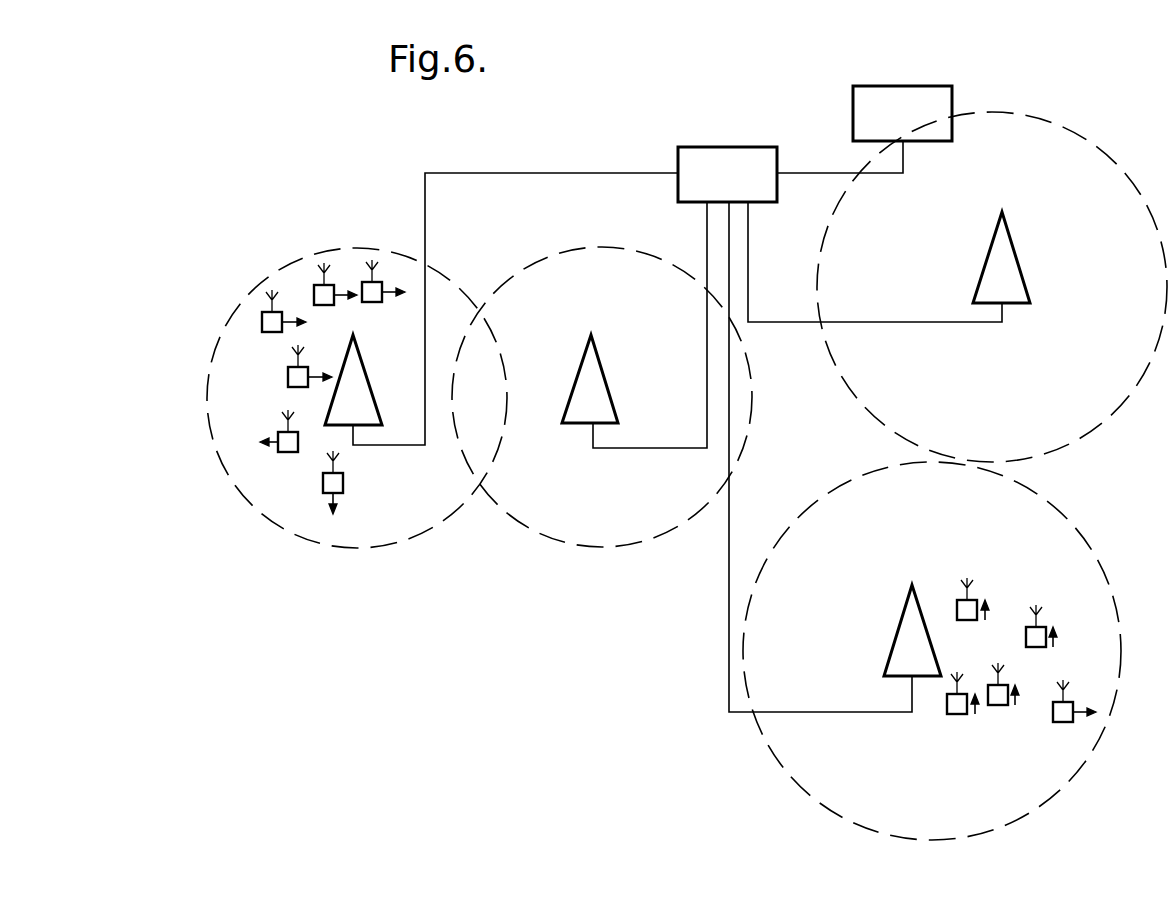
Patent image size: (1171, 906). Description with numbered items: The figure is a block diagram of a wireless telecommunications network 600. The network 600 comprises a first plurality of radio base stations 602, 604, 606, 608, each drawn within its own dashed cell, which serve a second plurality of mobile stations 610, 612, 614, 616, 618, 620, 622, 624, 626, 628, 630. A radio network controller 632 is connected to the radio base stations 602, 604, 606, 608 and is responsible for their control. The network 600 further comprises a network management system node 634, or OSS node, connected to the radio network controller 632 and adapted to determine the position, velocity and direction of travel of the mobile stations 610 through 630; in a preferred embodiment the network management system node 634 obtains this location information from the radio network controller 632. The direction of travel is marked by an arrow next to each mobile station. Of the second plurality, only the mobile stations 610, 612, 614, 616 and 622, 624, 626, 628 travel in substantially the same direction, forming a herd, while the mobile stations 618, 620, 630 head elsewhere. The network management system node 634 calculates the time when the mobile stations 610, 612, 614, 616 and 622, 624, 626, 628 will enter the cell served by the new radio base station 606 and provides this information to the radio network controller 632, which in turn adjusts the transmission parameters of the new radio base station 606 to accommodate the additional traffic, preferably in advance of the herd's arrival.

The network 600 is at (338, 633).
The radio base station 602 is at (357, 373).
The radio base station 604 is at (593, 377).
The new radio base station 606 is at (1008, 272).
The radio base station 608 is at (908, 630).
The mobile station 610 is at (262, 320).
The mobile station 612 is at (314, 293).
The mobile station 614 is at (363, 283).
The mobile station 616 is at (288, 376).
The mobile station 618 is at (287, 452).
The mobile station 620 is at (343, 483).
The mobile station 622 is at (975, 598).
The mobile station 624 is at (1030, 648).
The mobile station 626 is at (952, 716).
The mobile station 628 is at (998, 706).
The mobile station 630 is at (1060, 723).
The radio network controller 632 is at (686, 145).
The network management system node 634 is at (852, 120).